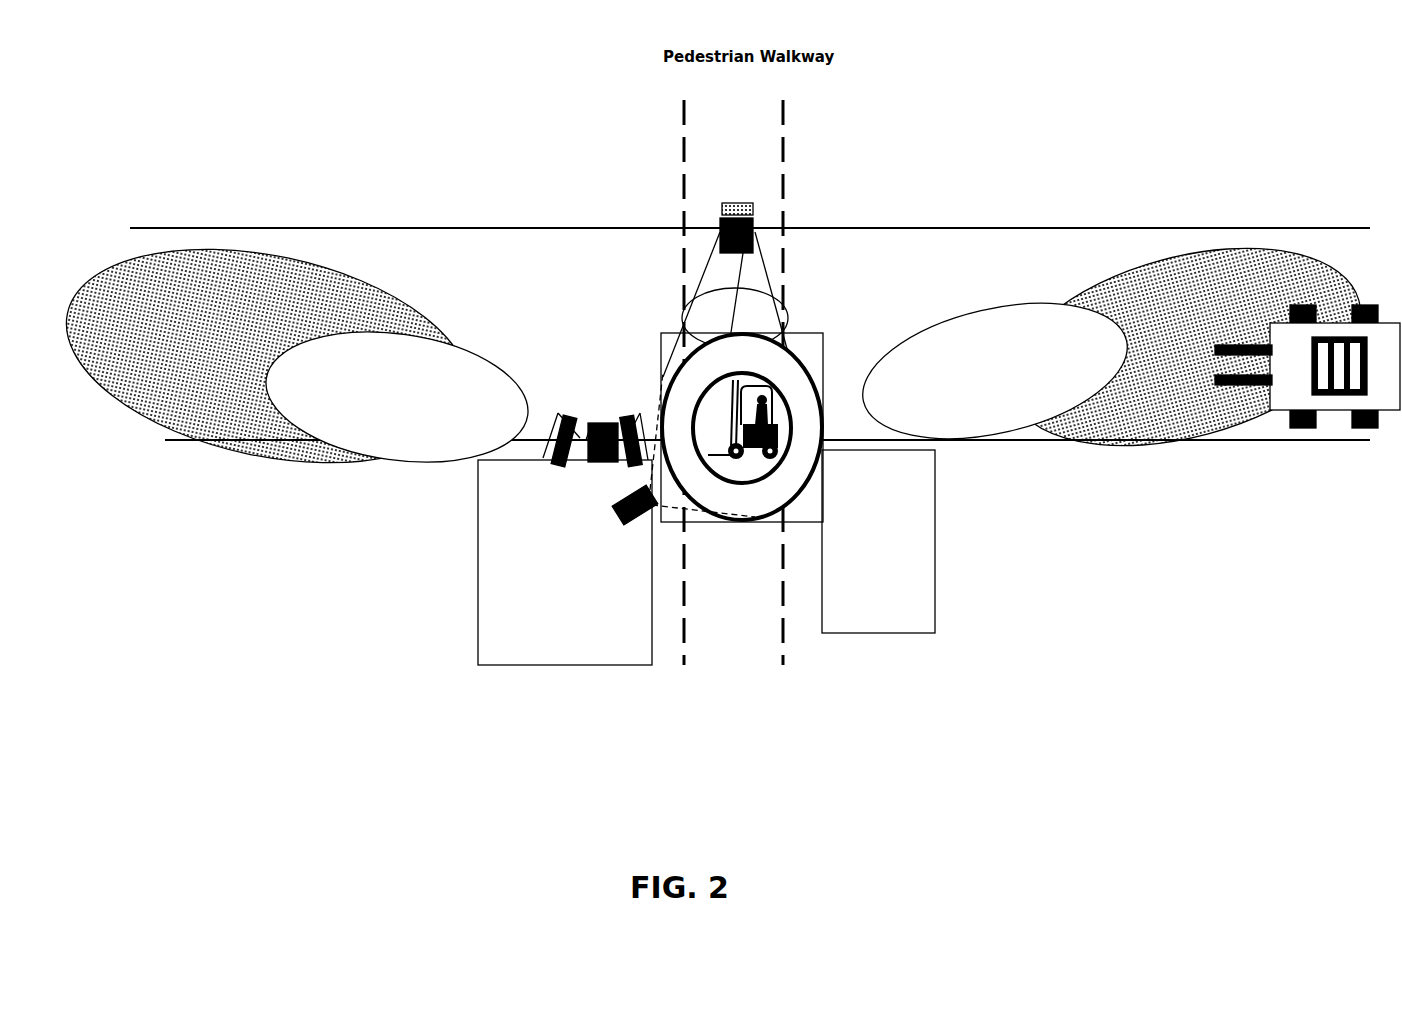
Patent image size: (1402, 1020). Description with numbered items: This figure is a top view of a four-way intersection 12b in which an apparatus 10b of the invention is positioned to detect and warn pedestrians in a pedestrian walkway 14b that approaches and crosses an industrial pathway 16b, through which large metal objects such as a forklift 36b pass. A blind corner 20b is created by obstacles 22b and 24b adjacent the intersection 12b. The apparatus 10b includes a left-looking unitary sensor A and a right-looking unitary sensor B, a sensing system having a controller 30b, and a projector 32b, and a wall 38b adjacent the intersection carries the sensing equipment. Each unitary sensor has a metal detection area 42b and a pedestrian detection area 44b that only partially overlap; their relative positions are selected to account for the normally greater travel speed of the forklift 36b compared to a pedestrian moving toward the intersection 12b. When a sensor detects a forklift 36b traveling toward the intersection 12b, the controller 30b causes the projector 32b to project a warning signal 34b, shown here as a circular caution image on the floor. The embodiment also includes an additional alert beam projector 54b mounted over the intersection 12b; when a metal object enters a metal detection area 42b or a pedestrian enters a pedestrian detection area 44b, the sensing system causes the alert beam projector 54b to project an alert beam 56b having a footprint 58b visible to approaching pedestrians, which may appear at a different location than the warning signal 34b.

The apparatus 10b is at (570, 469).
The intersection 12b is at (806, 326).
The pedestrian walkway 14b is at (805, 737).
The industrial pathway 16b is at (472, 293).
The blind corner 20b is at (898, 498).
The obstacle 22b is at (517, 617).
The obstacle 24b is at (892, 607).
The controller 30b is at (597, 463).
The projector 32b is at (625, 525).
The warning signal 34b is at (812, 375).
The forklift 36b is at (1192, 392).
The sensor A 38b is at (568, 418).
The metal detection area 42b is at (180, 390).
The pedestrian detection area 44b is at (337, 430).
The alert beam projector 54b is at (733, 212).
The alert beam 56b is at (702, 270).
The beam footprint 58b is at (682, 320).